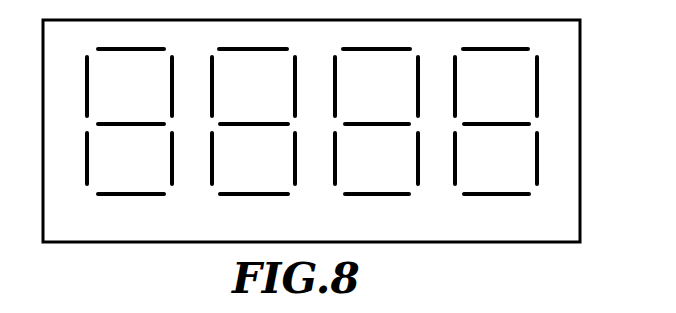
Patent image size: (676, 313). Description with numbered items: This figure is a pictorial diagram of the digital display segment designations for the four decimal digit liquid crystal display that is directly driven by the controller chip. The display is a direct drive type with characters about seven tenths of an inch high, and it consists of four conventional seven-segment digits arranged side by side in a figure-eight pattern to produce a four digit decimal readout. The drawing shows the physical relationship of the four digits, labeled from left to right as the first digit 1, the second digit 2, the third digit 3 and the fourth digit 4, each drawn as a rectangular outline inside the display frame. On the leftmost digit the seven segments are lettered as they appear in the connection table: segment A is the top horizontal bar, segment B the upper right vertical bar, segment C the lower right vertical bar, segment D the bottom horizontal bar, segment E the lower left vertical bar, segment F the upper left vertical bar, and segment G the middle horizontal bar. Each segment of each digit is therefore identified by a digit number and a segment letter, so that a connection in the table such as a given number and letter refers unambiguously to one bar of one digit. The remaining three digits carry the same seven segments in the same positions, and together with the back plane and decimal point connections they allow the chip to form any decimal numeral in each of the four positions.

The first digit 1 is at (125, 133).
The second digit 2 is at (253, 144).
The third digit 3 is at (376, 144).
The fourth digit 4 is at (496, 144).
The segment A is at (131, 38).
The segment B is at (182, 86).
The segment C is at (182, 158).
The segment D is at (131, 179).
The segment E is at (76, 158).
The segment F is at (73, 86).
The segment G is at (131, 112).